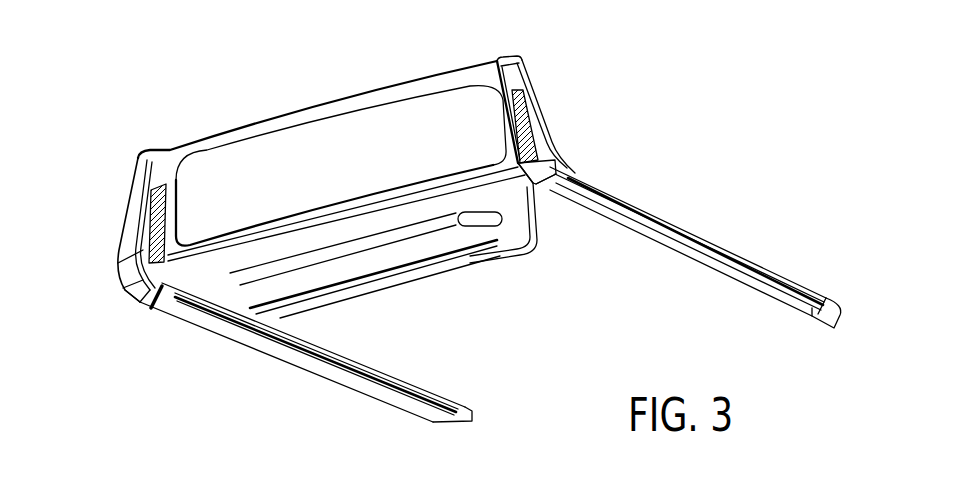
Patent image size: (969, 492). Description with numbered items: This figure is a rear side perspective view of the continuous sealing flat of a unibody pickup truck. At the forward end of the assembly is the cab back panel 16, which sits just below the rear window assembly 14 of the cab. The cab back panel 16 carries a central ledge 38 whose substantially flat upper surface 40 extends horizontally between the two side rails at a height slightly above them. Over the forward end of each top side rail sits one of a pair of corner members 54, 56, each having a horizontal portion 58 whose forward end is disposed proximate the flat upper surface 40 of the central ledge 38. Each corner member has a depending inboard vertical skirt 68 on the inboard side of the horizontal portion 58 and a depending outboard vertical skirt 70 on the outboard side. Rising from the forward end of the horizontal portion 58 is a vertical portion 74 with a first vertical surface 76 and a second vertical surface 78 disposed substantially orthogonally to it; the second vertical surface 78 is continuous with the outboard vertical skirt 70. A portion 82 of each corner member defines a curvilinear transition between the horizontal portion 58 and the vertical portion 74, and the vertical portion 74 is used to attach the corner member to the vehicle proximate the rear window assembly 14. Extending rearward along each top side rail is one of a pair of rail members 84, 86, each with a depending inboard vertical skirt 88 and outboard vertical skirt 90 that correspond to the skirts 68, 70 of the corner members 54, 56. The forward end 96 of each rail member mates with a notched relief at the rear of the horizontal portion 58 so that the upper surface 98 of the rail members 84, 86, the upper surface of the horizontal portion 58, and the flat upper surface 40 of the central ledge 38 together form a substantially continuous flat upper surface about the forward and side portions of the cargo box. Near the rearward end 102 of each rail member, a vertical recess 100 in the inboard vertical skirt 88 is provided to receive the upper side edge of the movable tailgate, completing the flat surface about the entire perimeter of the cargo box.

The rear window assembly 14 is at (457, 80).
The cab back panel 16 is at (467, 257).
The central ledge 38 is at (143, 276).
The flat upper surface 40 is at (223, 253).
The corner member 54 is at (138, 292).
The corner member 56 is at (553, 177).
The horizontal portion 58 is at (172, 283).
The inboard vertical skirt 68 is at (543, 183).
The outboard vertical skirt 70 is at (147, 293).
The vertical portion 74 is at (151, 182).
The first vertical surface 76 is at (145, 218).
The second vertical surface 78 is at (123, 242).
The curvilinear transition portion 82 is at (158, 243).
The rail member 84 is at (330, 375).
The rail member 86 is at (730, 260).
The inboard vertical skirt 88 is at (753, 287).
The outboard vertical skirt 90 is at (283, 358).
The forward end 96 is at (196, 317).
The upper surface 98 is at (405, 386).
The vertical recess 100 is at (820, 318).
The rearward end 102 is at (437, 393).